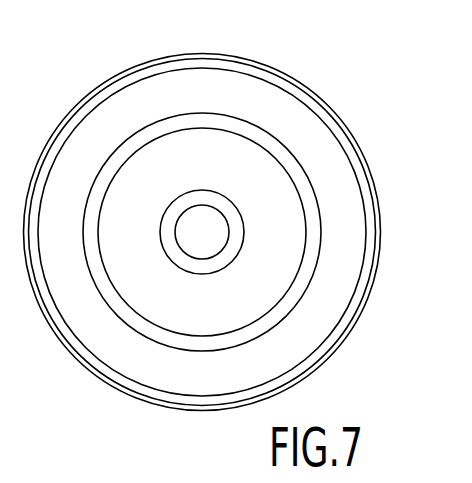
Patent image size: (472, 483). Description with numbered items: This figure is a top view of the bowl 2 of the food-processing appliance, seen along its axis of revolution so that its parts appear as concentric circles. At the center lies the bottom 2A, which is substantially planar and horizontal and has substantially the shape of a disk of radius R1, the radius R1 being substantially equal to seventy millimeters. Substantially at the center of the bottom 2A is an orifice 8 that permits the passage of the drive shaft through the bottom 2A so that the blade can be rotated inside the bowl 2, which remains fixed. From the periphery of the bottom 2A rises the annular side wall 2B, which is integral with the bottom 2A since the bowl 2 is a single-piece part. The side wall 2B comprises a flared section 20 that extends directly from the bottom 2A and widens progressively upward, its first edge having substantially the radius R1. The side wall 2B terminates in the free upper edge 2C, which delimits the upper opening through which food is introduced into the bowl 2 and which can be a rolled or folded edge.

The bowl 2 is at (356, 127).
The bottom 2A is at (271, 270).
The side wall 2B is at (142, 365).
The free upper edge 2C is at (118, 75).
The orifice 8 is at (208, 230).
The flared section 20 is at (224, 374).
The radius of the disk forming the bottom R1 is at (202, 233).